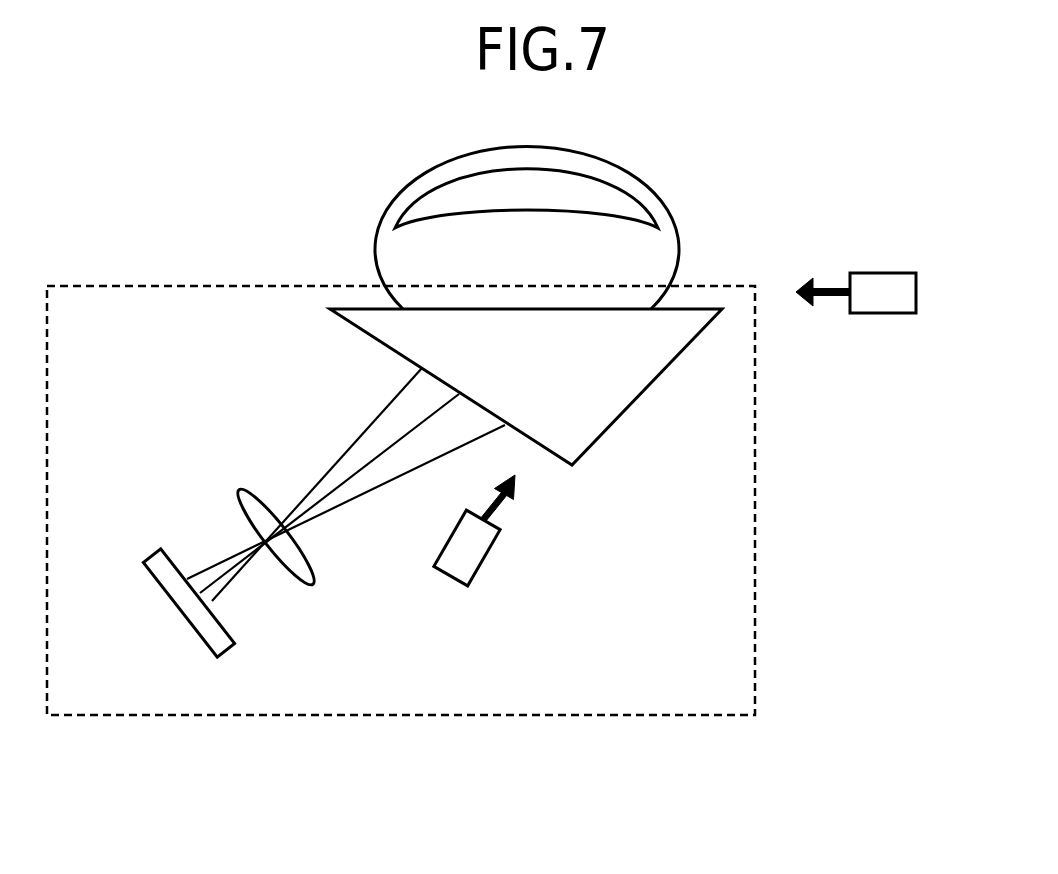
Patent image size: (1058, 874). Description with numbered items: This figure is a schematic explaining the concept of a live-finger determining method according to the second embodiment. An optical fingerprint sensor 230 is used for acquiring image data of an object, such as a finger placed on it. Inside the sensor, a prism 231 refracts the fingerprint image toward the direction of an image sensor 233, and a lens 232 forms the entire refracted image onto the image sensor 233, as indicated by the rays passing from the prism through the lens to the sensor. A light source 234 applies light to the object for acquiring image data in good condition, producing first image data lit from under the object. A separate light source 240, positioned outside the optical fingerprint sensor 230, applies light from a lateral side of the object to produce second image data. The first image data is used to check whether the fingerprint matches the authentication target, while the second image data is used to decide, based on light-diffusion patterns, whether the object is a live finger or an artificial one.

The optical fingerprint sensor 230 is at (727, 716).
The prism 231 is at (608, 435).
The lens 232 is at (238, 500).
The image sensor 233 is at (148, 553).
The light source 234 is at (488, 557).
The light source 240 is at (907, 273).